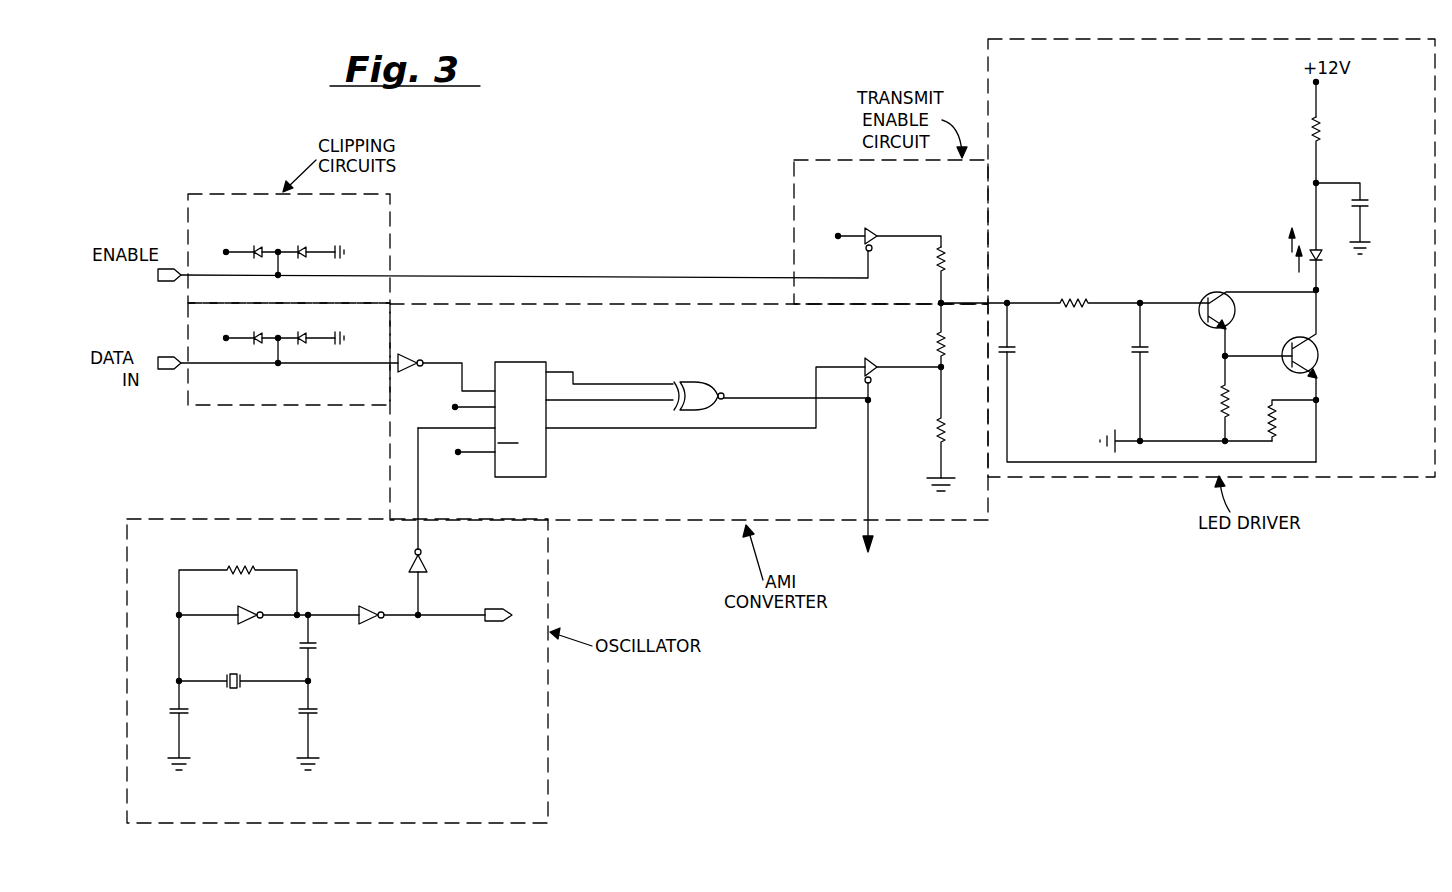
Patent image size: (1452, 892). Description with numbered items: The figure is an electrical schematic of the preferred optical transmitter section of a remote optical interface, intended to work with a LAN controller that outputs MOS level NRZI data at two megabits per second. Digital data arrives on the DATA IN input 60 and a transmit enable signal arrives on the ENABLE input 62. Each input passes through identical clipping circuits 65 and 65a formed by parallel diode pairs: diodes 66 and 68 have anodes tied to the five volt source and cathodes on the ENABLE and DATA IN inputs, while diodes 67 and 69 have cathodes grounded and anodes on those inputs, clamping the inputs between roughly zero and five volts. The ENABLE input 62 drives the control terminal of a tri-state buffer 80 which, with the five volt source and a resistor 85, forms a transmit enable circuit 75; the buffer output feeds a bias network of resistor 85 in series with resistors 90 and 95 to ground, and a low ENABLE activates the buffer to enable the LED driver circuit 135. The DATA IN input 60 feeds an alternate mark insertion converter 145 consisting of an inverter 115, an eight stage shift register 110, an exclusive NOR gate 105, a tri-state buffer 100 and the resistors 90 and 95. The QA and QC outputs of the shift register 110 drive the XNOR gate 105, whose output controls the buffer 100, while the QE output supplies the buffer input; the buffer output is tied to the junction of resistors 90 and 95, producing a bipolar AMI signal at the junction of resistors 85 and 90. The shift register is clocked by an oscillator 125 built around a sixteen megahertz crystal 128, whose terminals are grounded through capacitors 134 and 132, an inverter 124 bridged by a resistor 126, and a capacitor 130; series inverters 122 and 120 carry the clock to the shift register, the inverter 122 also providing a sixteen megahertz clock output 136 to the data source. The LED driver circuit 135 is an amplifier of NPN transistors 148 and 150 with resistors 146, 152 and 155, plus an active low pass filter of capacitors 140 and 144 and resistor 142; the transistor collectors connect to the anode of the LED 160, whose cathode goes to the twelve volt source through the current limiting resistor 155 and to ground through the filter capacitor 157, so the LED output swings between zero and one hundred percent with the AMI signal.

The DATA IN input 60 is at (183, 367).
The ENABLE input 62 is at (186, 272).
The clipping circuit 65 is at (289, 379).
The clipping circuit 65a is at (331, 246).
The diode 66 is at (255, 247).
The diode 67 is at (303, 257).
The diode 68 is at (258, 344).
The diode 69 is at (302, 344).
The transmit enable circuit 75 is at (840, 157).
The tri-state buffer 80 is at (866, 232).
The resistor 85 is at (942, 247).
The resistor 90 is at (940, 346).
The resistor 95 is at (938, 428).
The tri-state buffer 100 is at (858, 365).
The exclusive NOR gate 105 is at (676, 383).
The eight stage shift register 110 is at (546, 368).
The inverter 115 is at (400, 352).
The inverter 120 is at (406, 560).
The inverter 122 is at (364, 606).
The inverter 124 is at (252, 604).
The oscillator 125 is at (551, 713).
The resistor 126 is at (236, 572).
The crystal 128 is at (230, 680).
The capacitor 130 is at (314, 652).
The capacitor 132 is at (306, 716).
The capacitor 134 is at (176, 716).
The LED driver circuit 135 is at (1123, 478).
The 16 MHz clock output 136 is at (482, 606).
The capacitor 140 is at (1012, 358).
The resistor 142 is at (1094, 303).
The capacitor 144 is at (1135, 356).
The alternate mark insertion converter 145 is at (683, 525).
The resistor 146 is at (1255, 388).
The NPN transistor 148 is at (1204, 300).
The NPN transistor 150 is at (1312, 372).
The resistor 152 is at (1268, 428).
The current limiting resistor 155 is at (1314, 130).
The filter capacitor 157 is at (1366, 200).
The LED 160 is at (1312, 247).